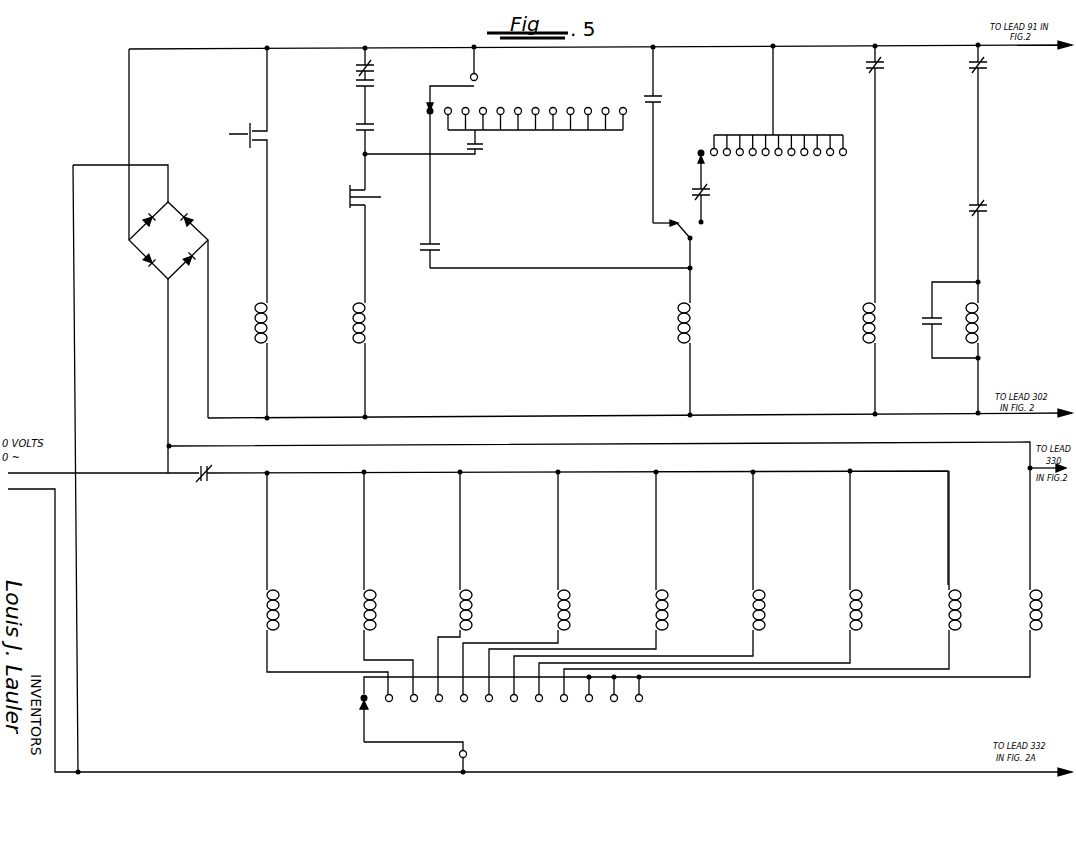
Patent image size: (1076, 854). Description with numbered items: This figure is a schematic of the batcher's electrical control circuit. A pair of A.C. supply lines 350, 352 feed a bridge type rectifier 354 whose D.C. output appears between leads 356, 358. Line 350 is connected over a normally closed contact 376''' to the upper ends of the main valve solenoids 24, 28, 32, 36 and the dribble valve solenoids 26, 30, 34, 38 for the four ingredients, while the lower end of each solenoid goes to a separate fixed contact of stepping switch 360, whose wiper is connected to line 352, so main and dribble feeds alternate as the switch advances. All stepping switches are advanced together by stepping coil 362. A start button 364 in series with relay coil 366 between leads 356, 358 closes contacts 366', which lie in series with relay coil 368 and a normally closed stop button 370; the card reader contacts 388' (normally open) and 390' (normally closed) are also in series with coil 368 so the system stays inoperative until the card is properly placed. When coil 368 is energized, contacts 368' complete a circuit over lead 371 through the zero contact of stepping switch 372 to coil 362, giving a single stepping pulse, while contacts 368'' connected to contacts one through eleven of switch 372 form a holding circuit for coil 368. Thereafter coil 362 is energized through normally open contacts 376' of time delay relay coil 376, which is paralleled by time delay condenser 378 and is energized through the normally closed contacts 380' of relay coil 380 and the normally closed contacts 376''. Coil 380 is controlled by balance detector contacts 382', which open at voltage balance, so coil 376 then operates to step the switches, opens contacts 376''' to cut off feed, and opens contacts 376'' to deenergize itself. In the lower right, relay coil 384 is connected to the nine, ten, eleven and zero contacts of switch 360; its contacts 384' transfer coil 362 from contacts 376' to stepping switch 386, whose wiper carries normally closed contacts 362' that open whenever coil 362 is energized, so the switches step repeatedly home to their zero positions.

The main valve solenoid 24 is at (280, 608).
The dribble valve solenoid 26 is at (377, 604).
The main valve solenoid 28 is at (473, 606).
The dribble valve solenoid 30 is at (571, 607).
The main valve solenoid 32 is at (669, 612).
The dribble valve solenoid 34 is at (766, 612).
The main valve solenoid 36 is at (863, 610).
The dribble valve solenoid 38 is at (955, 610).
The relay coil 384 is at (720, 639).
The A.C. supply line 350 is at (92, 478).
The A.C. supply line 352 is at (118, 763).
The bridge type rectifier 354 is at (141, 256).
The lead 356 is at (173, 50).
The lead 358 is at (246, 408).
The stepping switch 360 is at (500, 733).
The stepping coil 362 is at (714, 325).
The contacts 362' is at (723, 192).
The start button 364 is at (248, 143).
The relay coil 366 is at (241, 360).
The contacts 366' is at (348, 140).
The relay coil 368 is at (341, 360).
The contacts 368' is at (412, 199).
The contacts 368'' is at (441, 157).
The stop button 370 is at (349, 206).
The lead 371 is at (592, 262).
The stepping switch 372 is at (534, 138).
The time delay relay coil 376 is at (956, 347).
The contacts 376' is at (676, 135).
The contacts 376'' is at (1006, 232).
The contact 376''' is at (200, 495).
The time delay condenser 378 is at (937, 320).
The relay coil 380 is at (850, 358).
The contacts 380' is at (1000, 125).
The balance detector contacts 382' is at (897, 174).
The relay contacts 384' is at (703, 236).
The stepping switch 386 is at (782, 175).
The contacts 388' is at (384, 98).
The contacts 390' is at (388, 66).